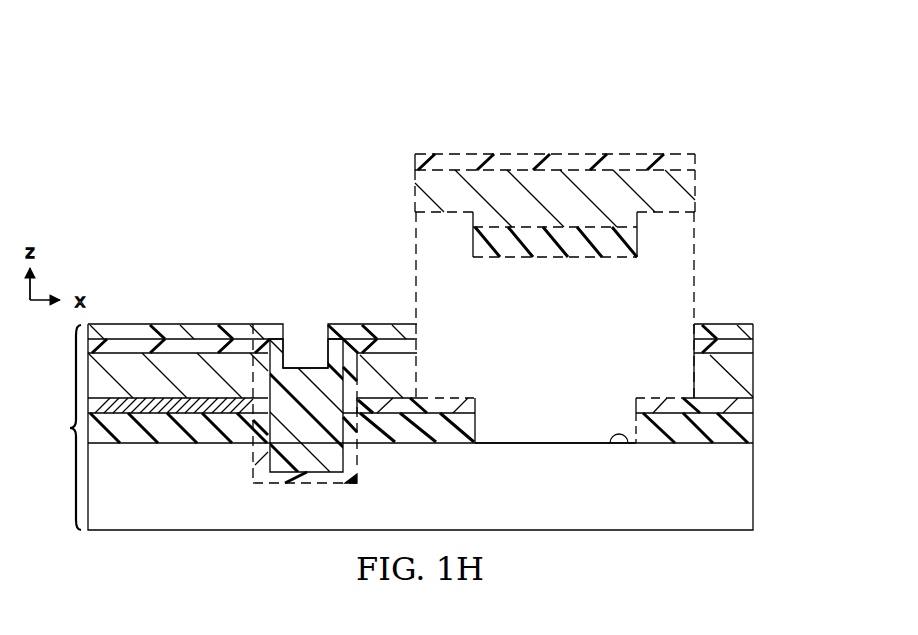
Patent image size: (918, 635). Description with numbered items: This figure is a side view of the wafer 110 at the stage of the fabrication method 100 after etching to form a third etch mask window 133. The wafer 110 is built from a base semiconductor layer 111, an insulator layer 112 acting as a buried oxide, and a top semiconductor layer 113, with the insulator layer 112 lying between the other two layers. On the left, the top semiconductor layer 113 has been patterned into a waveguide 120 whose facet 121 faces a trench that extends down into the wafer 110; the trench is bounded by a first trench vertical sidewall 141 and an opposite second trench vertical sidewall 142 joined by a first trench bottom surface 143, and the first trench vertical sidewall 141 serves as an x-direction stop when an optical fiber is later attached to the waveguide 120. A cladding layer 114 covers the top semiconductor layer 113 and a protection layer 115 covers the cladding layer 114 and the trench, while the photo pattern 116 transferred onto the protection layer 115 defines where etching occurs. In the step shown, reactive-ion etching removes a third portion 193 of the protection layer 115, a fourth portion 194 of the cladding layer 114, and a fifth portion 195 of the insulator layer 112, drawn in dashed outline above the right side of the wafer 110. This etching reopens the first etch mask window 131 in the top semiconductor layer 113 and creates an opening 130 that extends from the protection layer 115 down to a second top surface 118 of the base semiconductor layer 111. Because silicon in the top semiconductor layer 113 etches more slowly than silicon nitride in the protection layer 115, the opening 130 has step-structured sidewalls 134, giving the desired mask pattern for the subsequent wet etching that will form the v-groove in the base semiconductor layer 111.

The method 100 is at (645, 73).
The wafer 110 is at (54, 427).
The base semiconductor layer 111 is at (540, 497).
The insulator layer 112 is at (135, 438).
The top semiconductor layer 113 is at (160, 402).
The cladding layer 114 is at (118, 362).
The protection layer 115 is at (418, 349).
The photo pattern 116 is at (345, 332).
The second top surface 118 is at (620, 448).
The waveguide 120 is at (182, 416).
The facet 121 is at (250, 405).
The opening 130 is at (575, 331).
The first etch mask window 131 is at (553, 401).
The third etch mask window 133 is at (585, 426).
The step-structured sidewalls 134 is at (418, 373).
The first trench vertical sidewall 141 is at (253, 454).
The second trench vertical sidewall 142 is at (358, 453).
The first trench bottom surface 143 is at (330, 488).
The third portion 193 is at (565, 157).
The fourth portion 194 is at (697, 183).
The fifth portion 195 is at (508, 248).